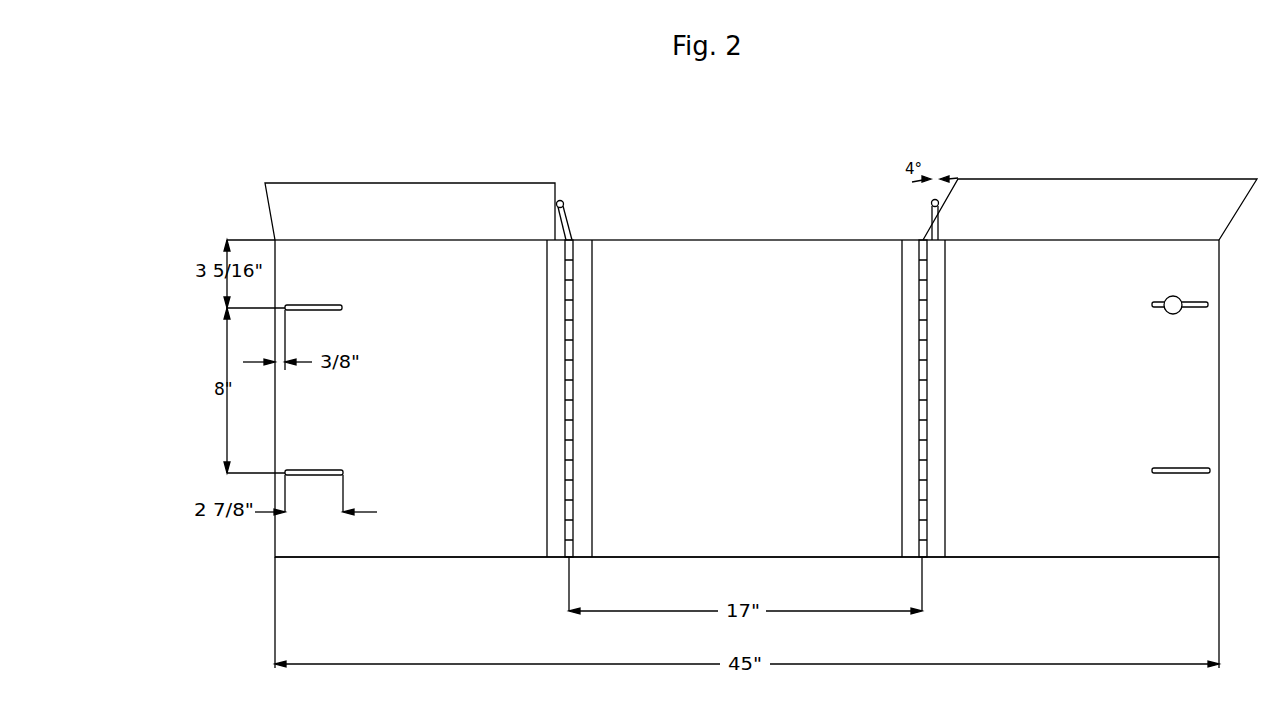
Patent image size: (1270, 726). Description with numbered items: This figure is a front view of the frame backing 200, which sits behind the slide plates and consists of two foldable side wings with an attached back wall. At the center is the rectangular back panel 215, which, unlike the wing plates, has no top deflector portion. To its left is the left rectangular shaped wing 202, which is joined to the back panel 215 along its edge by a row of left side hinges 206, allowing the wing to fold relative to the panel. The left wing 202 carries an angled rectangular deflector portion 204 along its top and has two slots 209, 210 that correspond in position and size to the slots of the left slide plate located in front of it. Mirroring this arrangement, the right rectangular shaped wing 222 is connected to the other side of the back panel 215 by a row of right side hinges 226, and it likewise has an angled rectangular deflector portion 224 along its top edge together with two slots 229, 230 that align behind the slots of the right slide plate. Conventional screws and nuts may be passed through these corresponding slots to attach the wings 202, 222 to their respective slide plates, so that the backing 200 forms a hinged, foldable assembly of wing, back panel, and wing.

The frame backing 200 is at (660, 187).
The left rectangular shaped wing 202 is at (463, 292).
The angled rectangular deflector portion 204 is at (323, 210).
The row of left side hinges 206 is at (570, 480).
The slot 209 is at (325, 303).
The slot 210 is at (335, 468).
The rectangular back panel 215 is at (730, 278).
The right rectangular shaped wing 222 is at (1032, 542).
The angled rectangular deflector portion 224 is at (1123, 202).
The row of right side hinges 226 is at (920, 330).
The slot 229 is at (1193, 310).
The slot 230 is at (1180, 474).